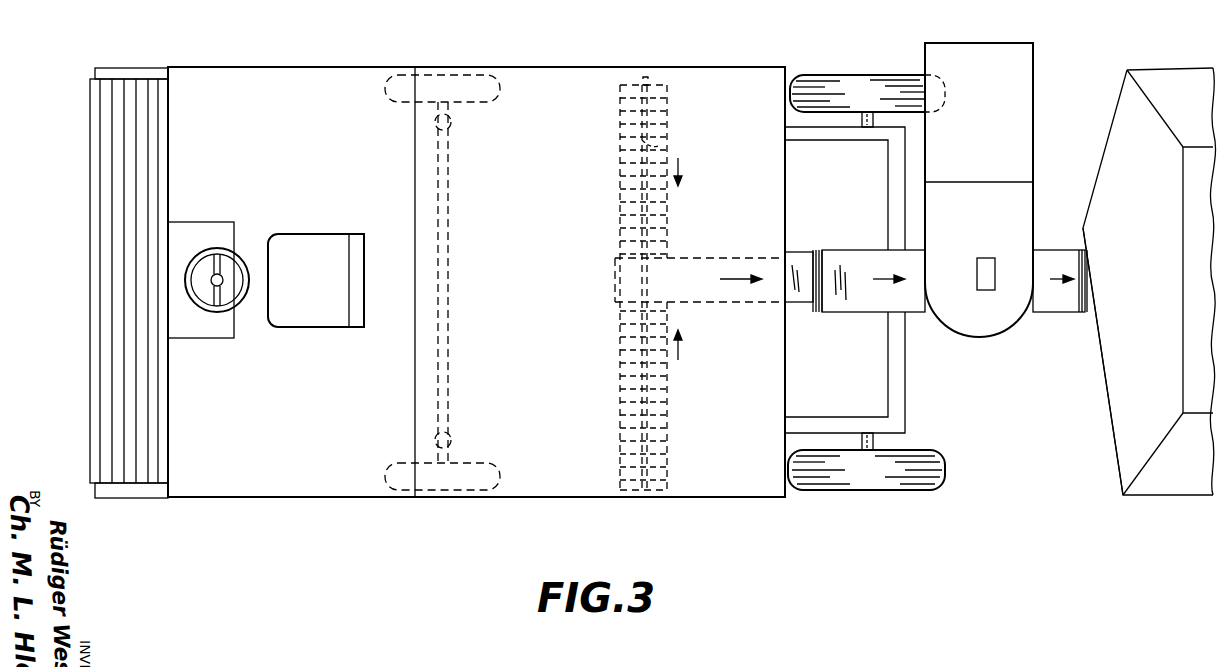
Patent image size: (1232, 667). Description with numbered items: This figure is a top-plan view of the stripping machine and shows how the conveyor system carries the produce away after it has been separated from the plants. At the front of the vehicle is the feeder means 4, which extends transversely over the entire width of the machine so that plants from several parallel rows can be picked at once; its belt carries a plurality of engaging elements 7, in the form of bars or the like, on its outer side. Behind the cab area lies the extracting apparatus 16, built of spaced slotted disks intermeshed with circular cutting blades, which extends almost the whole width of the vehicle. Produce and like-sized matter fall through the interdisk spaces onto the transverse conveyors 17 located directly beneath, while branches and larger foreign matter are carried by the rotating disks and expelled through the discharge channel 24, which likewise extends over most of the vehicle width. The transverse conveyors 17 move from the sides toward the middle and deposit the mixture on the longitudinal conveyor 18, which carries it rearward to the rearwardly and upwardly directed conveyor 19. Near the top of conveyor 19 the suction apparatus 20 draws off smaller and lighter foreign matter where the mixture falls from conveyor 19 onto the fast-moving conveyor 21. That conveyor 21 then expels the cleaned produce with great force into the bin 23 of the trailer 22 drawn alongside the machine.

The feeder means 4 is at (80, 364).
The engaging elements 7 is at (100, 212).
The extracting apparatus 16 is at (616, 190).
The transverse conveyor 17 is at (662, 148).
The longitudinal conveyor 18 is at (797, 258).
The conveyor 19 is at (910, 302).
The suction apparatus 20 is at (1018, 207).
The fast-moving conveyor 21 is at (1055, 300).
The trailer 22 is at (1092, 440).
The bin 23 is at (1108, 382).
The discharge channel 24 is at (747, 189).